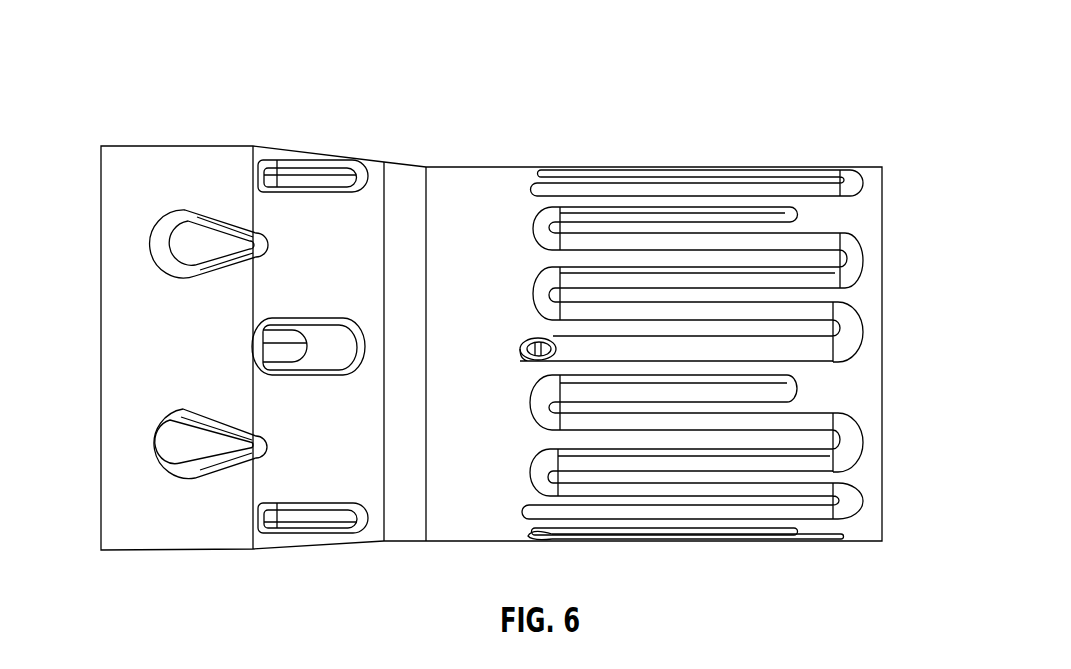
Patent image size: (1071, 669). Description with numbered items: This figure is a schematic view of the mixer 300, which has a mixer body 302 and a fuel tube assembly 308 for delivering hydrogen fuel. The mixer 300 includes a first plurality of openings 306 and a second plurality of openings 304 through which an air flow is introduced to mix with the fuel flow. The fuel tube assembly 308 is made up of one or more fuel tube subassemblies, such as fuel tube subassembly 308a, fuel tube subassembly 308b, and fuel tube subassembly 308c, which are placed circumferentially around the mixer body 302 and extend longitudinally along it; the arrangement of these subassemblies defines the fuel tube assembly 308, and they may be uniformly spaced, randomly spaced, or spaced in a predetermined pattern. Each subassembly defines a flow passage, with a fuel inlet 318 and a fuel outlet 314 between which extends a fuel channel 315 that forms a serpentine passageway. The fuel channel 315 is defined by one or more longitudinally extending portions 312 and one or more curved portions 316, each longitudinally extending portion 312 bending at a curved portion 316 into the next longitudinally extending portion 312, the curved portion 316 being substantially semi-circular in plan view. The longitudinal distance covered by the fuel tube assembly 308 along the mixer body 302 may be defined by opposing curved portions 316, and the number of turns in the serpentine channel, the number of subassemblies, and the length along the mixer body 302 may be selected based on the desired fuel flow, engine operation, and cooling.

The mixer 300 is at (146, 30).
The mixer body 302 is at (420, 164).
The second plurality of openings 304 is at (320, 170).
The first plurality of openings 306 is at (215, 220).
The fuel tube assembly 308 is at (704, 305).
The fuel tube subassembly 308a is at (704, 265).
The fuel tube subassembly 308b is at (860, 475).
The fuel tube subassembly 308c is at (743, 148).
The longitudinally extending portion 312 is at (808, 318).
The fuel outlet 314 is at (535, 338).
The fuel channel 315 is at (520, 292).
The curved portion 316 is at (848, 250).
The fuel inlet 318 is at (857, 181).